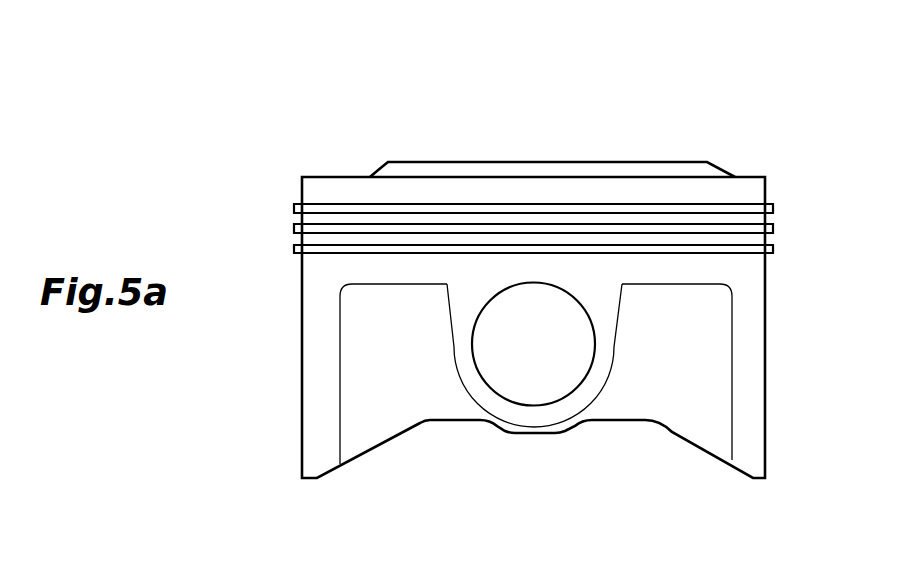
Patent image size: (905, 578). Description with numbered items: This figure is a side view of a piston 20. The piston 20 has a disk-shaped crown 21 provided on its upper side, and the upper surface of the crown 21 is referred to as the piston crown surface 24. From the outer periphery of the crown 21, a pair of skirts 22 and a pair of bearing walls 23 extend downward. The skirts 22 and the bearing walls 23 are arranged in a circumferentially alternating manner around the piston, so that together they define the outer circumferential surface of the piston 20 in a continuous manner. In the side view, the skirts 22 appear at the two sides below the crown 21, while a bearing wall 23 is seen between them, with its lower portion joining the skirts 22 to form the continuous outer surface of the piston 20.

The piston 20 is at (303, 140).
The crown 21 is at (672, 183).
The skirts 22 is at (313, 428).
The bearing walls 23 is at (620, 407).
The piston crown surface 24 is at (335, 177).